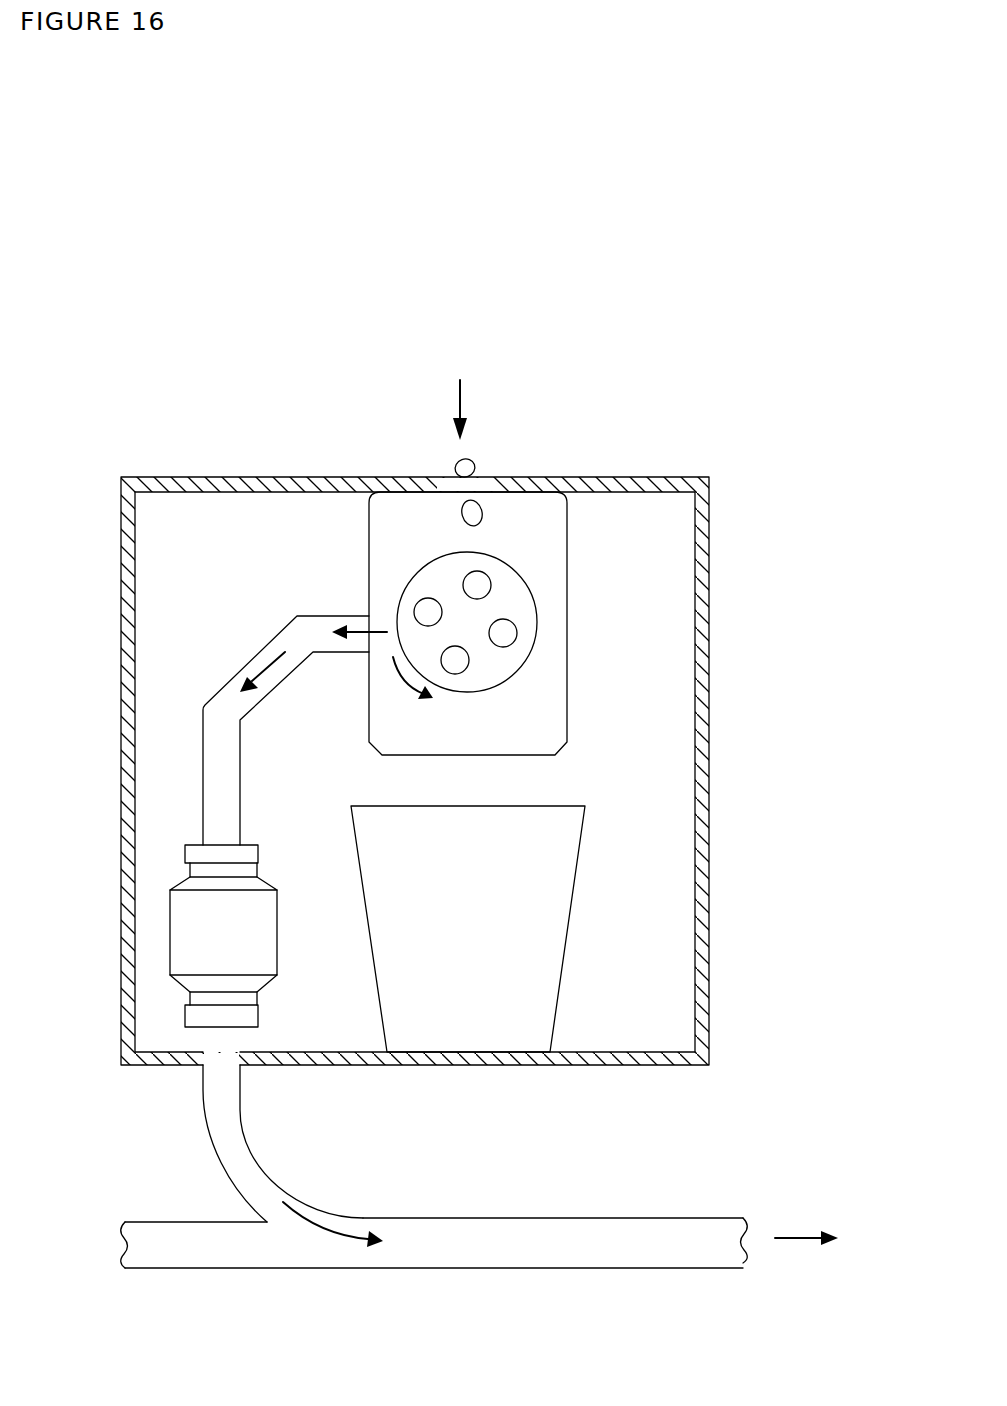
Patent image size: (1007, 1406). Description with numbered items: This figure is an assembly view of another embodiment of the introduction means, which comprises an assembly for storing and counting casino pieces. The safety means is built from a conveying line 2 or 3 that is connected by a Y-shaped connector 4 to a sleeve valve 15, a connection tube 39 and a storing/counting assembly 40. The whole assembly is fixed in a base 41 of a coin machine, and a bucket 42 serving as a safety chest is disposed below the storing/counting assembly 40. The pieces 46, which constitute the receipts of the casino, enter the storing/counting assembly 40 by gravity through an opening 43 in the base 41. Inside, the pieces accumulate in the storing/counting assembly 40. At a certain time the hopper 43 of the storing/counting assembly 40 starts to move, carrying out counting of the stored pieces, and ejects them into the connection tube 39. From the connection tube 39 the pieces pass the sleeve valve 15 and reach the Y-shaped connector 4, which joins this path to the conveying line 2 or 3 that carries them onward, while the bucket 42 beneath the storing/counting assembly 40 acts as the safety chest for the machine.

The conveying line 2 is at (479, 1273).
The conveying line 3 is at (570, 1260).
The Y-shaped connector 4 is at (307, 1207).
The sleeve valve 15 is at (185, 932).
The connection tube 39 is at (220, 762).
The storing/counting assembly 40 is at (541, 570).
The base 41 is at (707, 636).
The bucket 42 is at (540, 945).
The opening / hopper 43 is at (492, 478).
The pieces 46 is at (465, 465).